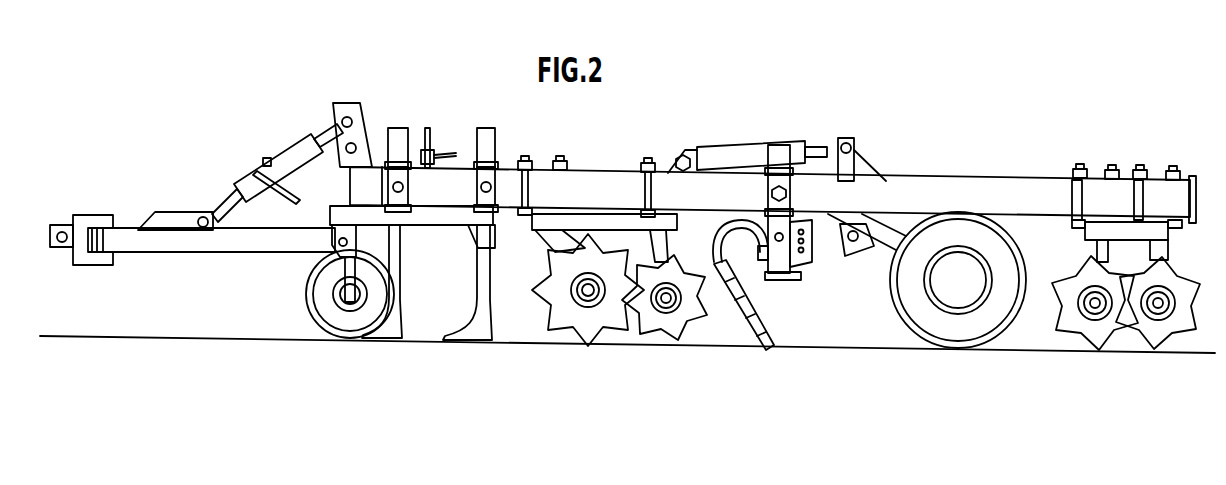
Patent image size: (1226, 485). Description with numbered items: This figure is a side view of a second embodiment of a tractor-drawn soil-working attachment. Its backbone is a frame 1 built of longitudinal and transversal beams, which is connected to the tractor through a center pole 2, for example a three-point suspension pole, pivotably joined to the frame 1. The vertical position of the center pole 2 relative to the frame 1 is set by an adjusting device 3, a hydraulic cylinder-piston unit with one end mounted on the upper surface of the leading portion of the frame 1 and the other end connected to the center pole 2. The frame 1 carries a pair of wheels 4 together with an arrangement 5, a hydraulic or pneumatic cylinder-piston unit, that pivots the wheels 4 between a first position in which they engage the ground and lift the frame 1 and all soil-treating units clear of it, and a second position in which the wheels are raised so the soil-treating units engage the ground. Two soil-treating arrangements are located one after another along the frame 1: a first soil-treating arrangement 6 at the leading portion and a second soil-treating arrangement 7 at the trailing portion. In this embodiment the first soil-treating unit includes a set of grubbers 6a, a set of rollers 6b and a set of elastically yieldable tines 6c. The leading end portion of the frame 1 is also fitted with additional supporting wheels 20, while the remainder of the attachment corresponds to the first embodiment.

The frame 1 is at (605, 178).
The center pole 2 is at (191, 243).
The adjusting device 3 is at (295, 153).
The wheels 4 is at (957, 333).
The arrangement for displacing the wheels 5 is at (737, 152).
The first soil-treating arrangement 6 is at (561, 418).
The grubbers 6a is at (417, 358).
The rollers 6b is at (620, 364).
The elastically yieldable tines 6c is at (750, 366).
The second soil-treating arrangement 7 is at (1127, 368).
The additional supporting wheels 20 is at (330, 325).